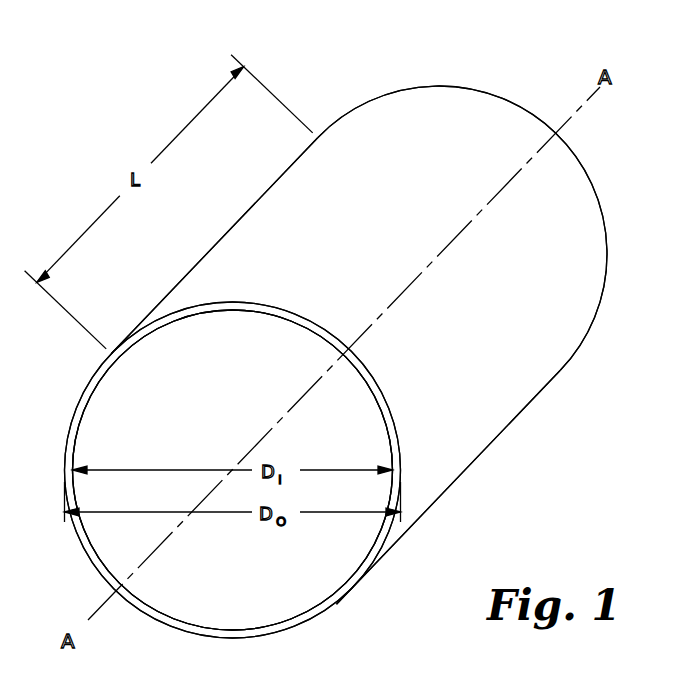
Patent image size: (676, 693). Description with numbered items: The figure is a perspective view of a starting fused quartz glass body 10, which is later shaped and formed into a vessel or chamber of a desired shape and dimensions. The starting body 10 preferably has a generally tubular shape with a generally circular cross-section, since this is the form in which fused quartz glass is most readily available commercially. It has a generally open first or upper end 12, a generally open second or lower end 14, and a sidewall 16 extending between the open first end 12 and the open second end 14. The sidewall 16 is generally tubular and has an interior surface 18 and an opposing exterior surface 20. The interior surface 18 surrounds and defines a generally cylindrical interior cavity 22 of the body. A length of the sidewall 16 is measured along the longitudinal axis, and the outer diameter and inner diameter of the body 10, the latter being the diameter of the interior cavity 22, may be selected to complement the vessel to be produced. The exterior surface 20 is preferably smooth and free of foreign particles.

The starting fused quartz glass body 10 is at (145, 118).
The first or upper end 12 is at (106, 403).
The second or lower end 14 is at (424, 88).
The sidewall 16 is at (313, 167).
The interior surface 18 is at (73, 461).
The exterior surface 20 is at (477, 444).
The interior cavity 22 is at (227, 408).